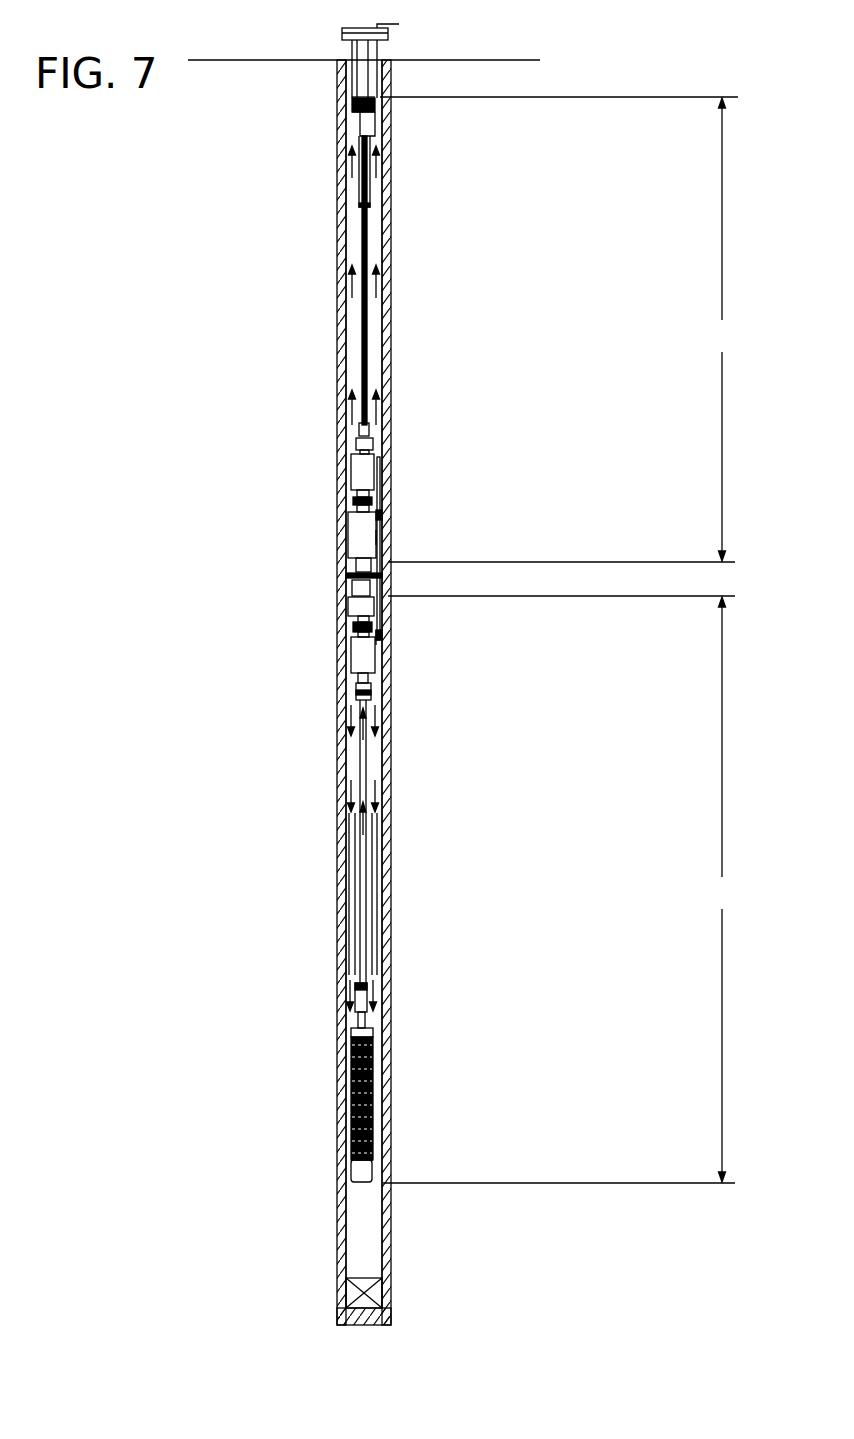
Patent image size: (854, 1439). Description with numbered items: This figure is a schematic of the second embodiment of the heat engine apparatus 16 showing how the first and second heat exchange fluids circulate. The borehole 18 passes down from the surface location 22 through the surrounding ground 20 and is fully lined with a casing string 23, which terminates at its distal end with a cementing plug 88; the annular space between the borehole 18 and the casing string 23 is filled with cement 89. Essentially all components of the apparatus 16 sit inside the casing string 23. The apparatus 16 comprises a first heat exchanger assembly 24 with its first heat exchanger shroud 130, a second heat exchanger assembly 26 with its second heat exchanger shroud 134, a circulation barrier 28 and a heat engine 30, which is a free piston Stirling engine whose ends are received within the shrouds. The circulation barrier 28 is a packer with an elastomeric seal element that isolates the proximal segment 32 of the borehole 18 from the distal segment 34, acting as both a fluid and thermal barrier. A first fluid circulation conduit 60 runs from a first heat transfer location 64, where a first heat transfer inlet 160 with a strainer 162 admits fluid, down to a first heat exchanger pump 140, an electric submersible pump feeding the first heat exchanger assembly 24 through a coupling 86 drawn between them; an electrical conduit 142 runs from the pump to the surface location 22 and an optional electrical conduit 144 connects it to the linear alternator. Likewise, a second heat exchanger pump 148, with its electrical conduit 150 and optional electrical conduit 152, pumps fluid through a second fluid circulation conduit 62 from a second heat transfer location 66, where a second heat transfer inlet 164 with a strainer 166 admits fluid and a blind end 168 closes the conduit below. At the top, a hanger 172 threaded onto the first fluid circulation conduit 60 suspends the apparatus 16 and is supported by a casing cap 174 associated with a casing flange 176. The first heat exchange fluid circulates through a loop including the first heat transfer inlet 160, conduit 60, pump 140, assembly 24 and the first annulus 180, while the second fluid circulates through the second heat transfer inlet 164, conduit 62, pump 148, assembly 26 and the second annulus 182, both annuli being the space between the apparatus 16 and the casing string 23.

The heat engine apparatus 16 is at (435, 372).
The borehole 18 is at (352, 250).
The formation 20 is at (238, 198).
The surface location 22 is at (418, 50).
The casing string 23 is at (386, 150).
The first heat exchanger assembly 24 is at (360, 544).
The second heat exchanger assembly 26 is at (356, 602).
The circulation barrier 28 is at (346, 574).
The heat engine 30 is at (388, 575).
The proximal segment 32 is at (721, 329).
The distal segment 34 is at (559, 890).
The first fluid circulation conduit 60 is at (370, 350).
The second fluid circulation conduit 62 is at (372, 950).
The first heat transfer location 64 is at (354, 97).
The second heat transfer location 66 is at (372, 1140).
The connector 86 is at (387, 505).
The cementing plug 88 is at (372, 1297).
The cement 89 is at (384, 392).
The first heat exchanger shroud 130 is at (350, 525).
The second heat exchanger shroud 134 is at (350, 618).
The first heat exchanger pump 140 is at (352, 471).
The electrical conduit 142 is at (387, 516).
The electrical conduit 144 is at (386, 470).
The second heat exchanger pump 148 is at (352, 668).
The electrical conduit 150 is at (387, 537).
The electrical conduit 152 is at (385, 625).
The first heat transfer inlet 160 is at (352, 105).
The strainer 162 is at (356, 113).
The second heat transfer inlet 164 is at (372, 1090).
The strainer 166 is at (372, 1055).
The blind end 168 is at (366, 1172).
The hanger 172 is at (360, 60).
The casing cap 174 is at (342, 32).
The casing flange 176 is at (392, 38).
The first annulus 180 is at (382, 236).
The second annulus 182 is at (375, 895).